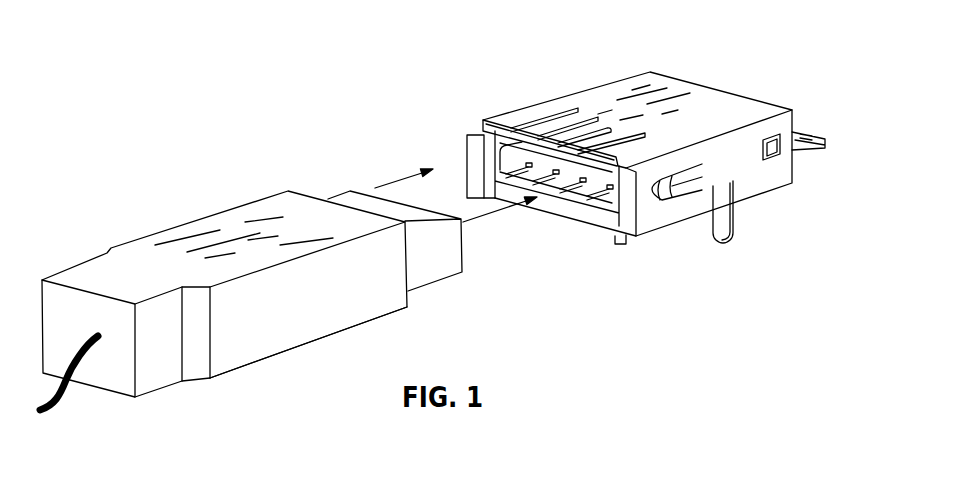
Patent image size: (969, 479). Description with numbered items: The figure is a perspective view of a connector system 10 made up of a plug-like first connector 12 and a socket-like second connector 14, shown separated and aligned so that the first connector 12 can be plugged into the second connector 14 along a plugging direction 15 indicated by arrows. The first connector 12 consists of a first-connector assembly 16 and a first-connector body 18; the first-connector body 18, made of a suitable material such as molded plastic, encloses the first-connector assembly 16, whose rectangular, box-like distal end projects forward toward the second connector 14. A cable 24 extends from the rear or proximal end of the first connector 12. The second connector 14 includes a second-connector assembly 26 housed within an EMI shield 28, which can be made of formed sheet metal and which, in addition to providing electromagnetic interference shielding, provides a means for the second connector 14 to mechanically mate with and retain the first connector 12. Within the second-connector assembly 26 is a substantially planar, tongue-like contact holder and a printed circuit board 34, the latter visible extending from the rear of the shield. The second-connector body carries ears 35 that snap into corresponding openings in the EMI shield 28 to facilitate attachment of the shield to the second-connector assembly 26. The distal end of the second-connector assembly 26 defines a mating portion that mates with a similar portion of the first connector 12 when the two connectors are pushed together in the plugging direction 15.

The connector system 10 is at (306, 68).
The first connector 12 is at (204, 201).
The second connector 14 is at (647, 161).
The plugging direction 15 is at (394, 178).
The first-connector assembly 16 is at (442, 282).
The first-connector body 18 is at (297, 353).
The cable 24 is at (63, 401).
The second-connector assembly 26 is at (574, 205).
The EMI shield 28 is at (697, 80).
The printed circuit board 34 is at (812, 154).
The ears 35 is at (775, 159).